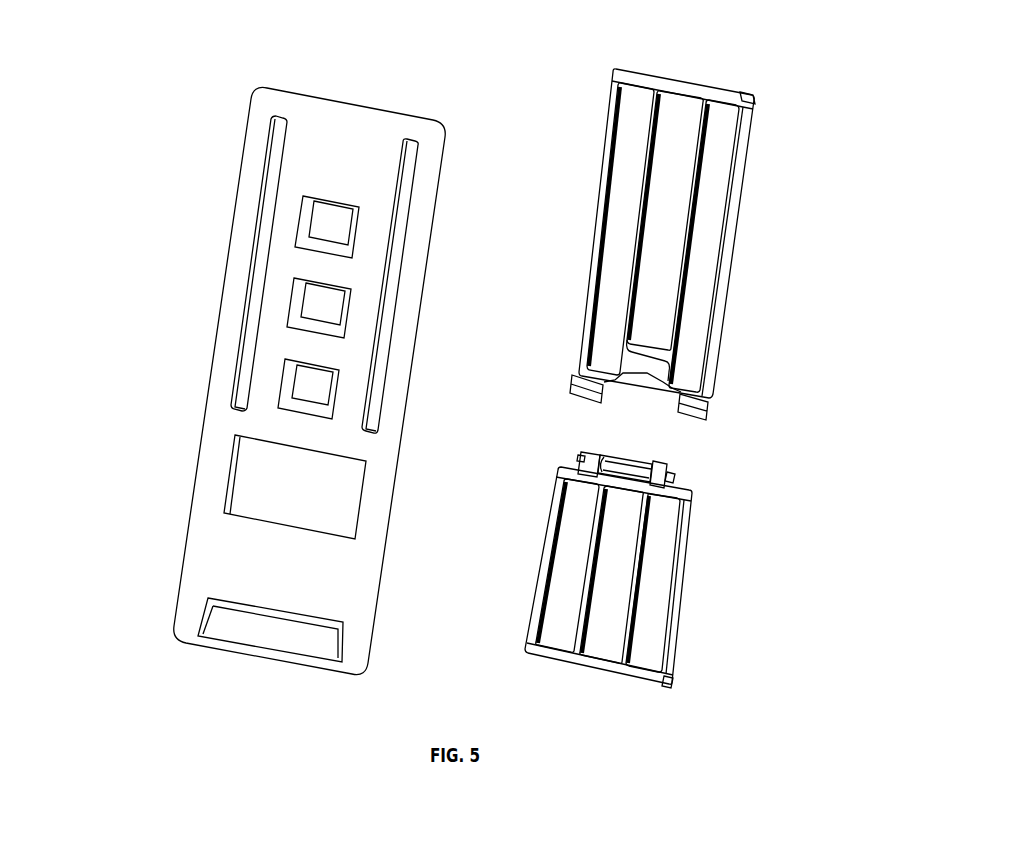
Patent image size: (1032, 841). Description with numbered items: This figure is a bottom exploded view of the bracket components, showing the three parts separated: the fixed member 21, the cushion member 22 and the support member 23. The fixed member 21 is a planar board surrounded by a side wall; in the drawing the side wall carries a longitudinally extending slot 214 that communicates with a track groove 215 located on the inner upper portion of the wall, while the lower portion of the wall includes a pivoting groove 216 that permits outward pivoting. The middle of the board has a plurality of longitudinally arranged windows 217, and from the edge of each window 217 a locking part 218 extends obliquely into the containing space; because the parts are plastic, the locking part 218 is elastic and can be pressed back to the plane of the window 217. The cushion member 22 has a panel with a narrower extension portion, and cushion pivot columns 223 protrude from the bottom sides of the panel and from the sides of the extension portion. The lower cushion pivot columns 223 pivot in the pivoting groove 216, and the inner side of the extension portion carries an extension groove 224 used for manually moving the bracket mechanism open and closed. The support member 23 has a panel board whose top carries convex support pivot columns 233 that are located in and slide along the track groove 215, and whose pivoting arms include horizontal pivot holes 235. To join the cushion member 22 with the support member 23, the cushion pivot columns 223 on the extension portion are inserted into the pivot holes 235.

The fixed member 21 is at (284, 380).
The slot 214 is at (263, 288).
The track groove 215 is at (237, 390).
The pivoting groove 216 is at (205, 627).
The window 217 is at (410, 217).
The locking part 218 is at (338, 228).
The cushion member 22 is at (692, 556).
The cushion pivot column 223 is at (722, 585).
The extension groove 224 is at (628, 470).
The support member 23 is at (728, 252).
The support pivot column 233 is at (756, 99).
The pivot hole 235 is at (709, 410).